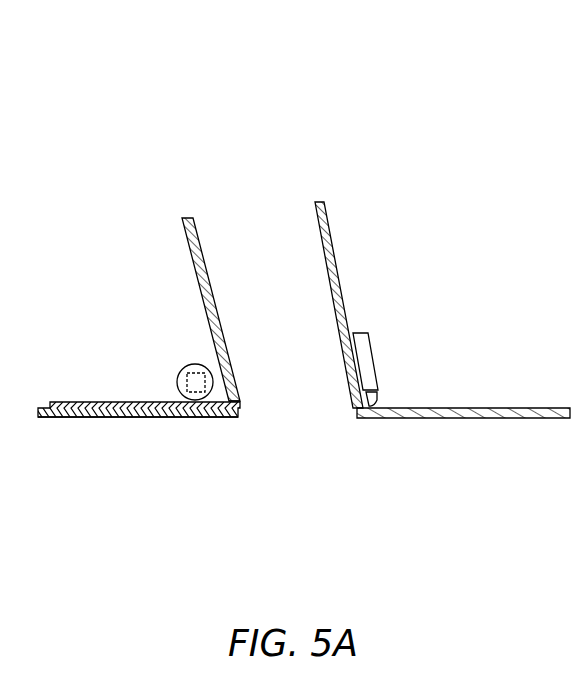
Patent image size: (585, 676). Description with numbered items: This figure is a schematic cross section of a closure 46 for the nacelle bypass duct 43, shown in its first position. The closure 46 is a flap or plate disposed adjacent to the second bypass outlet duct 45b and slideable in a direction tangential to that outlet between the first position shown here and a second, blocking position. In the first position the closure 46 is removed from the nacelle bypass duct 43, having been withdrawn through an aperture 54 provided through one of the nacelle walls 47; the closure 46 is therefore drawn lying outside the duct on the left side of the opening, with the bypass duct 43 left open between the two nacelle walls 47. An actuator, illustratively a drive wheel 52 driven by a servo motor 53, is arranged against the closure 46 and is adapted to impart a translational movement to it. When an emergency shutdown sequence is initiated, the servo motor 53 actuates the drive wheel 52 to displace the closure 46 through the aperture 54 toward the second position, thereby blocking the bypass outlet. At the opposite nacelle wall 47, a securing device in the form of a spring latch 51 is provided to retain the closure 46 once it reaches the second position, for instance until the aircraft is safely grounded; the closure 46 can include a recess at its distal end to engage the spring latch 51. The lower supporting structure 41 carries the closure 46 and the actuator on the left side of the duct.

The base plate 41 is at (139, 482).
The nacelle bypass duct 43 is at (235, 214).
The second bypass outlet duct 45b is at (303, 418).
The closure 46 is at (178, 418).
The nacelle wall 47 is at (341, 288).
The spring latch 51 is at (388, 386).
The drive wheel 52 is at (181, 368).
The servo motor 53 is at (196, 382).
The aperture 54 is at (241, 398).